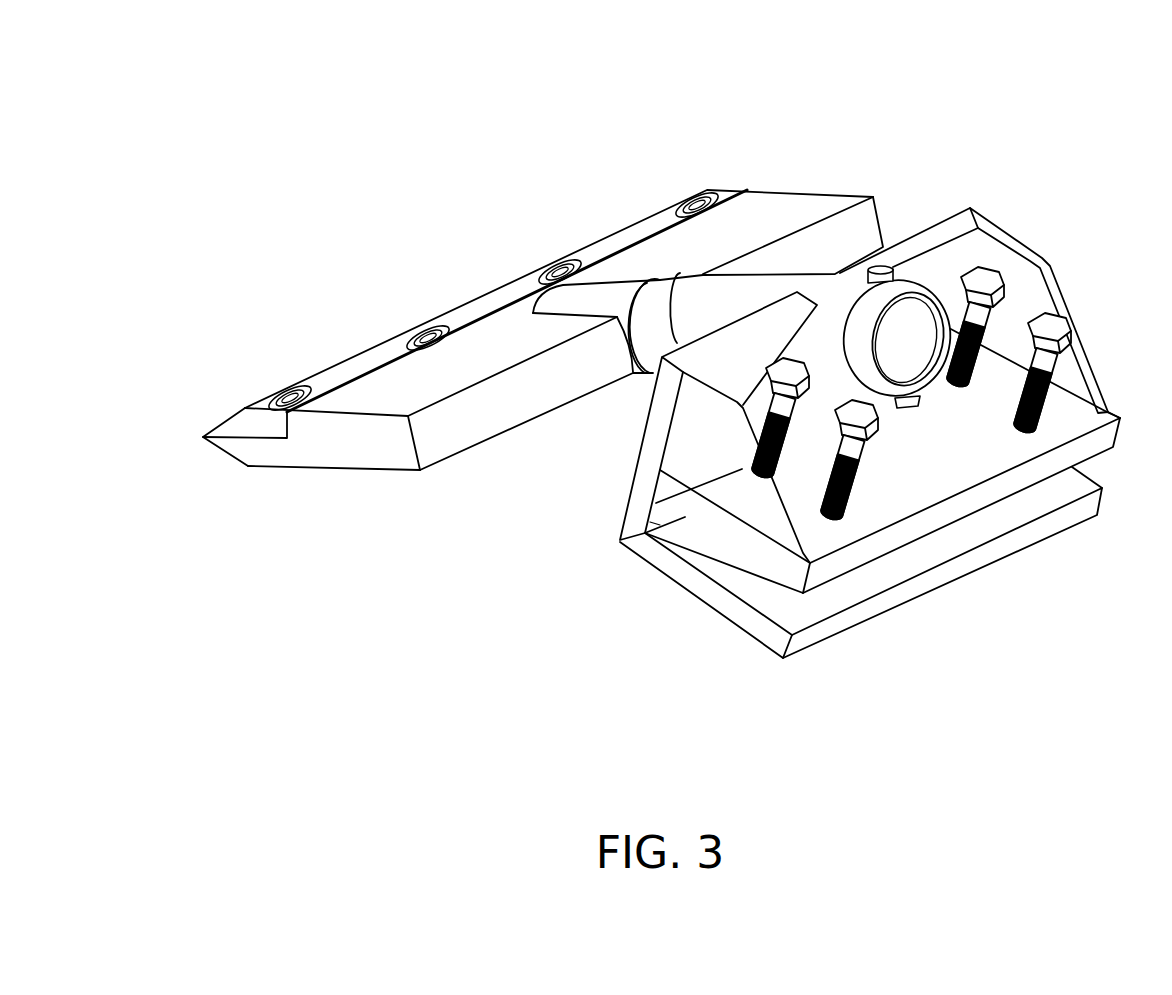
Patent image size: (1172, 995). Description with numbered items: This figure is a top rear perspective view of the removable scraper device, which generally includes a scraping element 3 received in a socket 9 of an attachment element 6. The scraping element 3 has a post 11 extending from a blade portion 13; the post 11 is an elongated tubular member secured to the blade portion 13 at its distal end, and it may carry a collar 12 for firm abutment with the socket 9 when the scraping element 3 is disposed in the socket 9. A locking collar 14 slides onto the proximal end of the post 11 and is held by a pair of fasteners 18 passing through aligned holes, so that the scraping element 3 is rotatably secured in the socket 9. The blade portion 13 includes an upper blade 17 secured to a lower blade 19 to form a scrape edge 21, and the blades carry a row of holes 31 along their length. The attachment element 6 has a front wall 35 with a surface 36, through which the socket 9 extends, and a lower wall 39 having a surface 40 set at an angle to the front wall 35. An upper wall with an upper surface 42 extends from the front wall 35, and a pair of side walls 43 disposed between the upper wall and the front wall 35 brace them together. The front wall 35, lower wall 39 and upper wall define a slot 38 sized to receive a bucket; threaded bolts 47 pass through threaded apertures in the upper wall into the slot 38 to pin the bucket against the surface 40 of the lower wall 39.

The scraping element 3 is at (480, 200).
The attachment element 6 is at (1005, 155).
The socket 9 is at (765, 290).
The post 11 is at (908, 352).
The collar 12 is at (680, 290).
The blade portion 13 is at (288, 483).
The locking collar 14 is at (925, 292).
The upper blade 17 is at (237, 425).
The fasteners 18 is at (892, 268).
The lower blade 19 is at (398, 404).
The scrape edge 21 is at (198, 440).
The fastener hole 31 is at (280, 390).
The front wall 35 is at (657, 497).
The surface 36 is at (660, 515).
The slot 38 is at (722, 560).
The lower wall 39 is at (940, 577).
The surface 40 is at (825, 600).
The upper surface 42 is at (990, 462).
The side walls 43 is at (686, 453).
The threaded bolts 47 is at (983, 273).